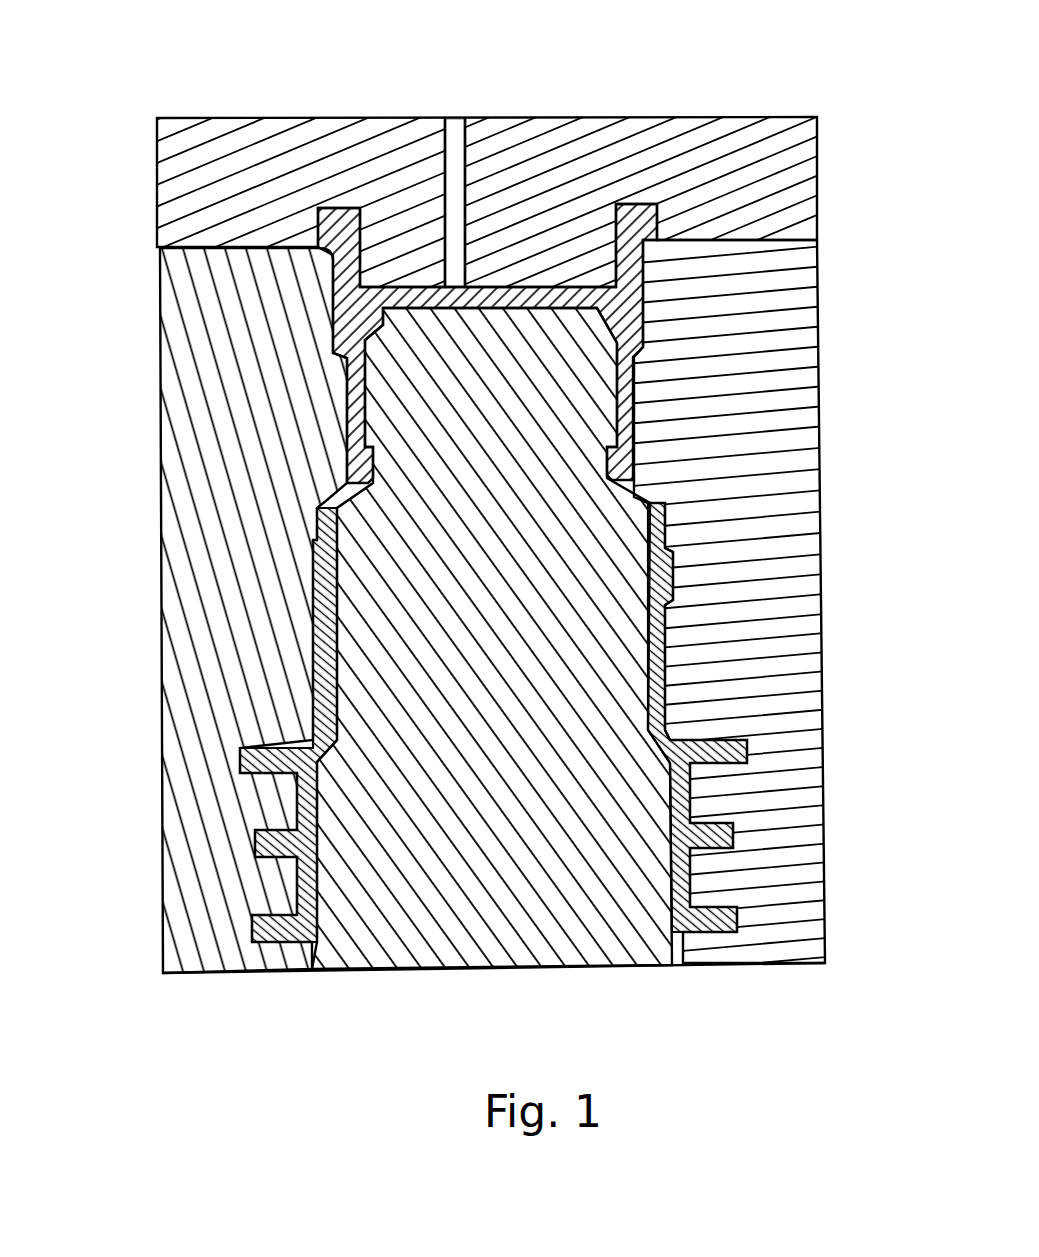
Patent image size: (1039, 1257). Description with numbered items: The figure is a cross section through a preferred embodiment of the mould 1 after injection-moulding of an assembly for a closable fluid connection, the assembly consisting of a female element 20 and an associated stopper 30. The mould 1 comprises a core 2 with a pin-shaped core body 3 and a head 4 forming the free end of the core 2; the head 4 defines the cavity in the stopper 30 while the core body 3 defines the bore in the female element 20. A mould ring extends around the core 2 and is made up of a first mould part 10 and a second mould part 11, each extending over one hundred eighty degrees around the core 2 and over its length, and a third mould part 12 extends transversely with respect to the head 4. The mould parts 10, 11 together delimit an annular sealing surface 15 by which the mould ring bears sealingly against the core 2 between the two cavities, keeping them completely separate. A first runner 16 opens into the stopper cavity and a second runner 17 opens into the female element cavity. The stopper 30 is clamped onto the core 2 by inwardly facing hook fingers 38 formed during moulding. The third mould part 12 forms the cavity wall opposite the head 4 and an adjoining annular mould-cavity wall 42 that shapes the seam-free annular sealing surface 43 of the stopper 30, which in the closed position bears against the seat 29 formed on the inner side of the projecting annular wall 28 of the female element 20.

The mould 1 is at (188, 1042).
The core 2 is at (456, 996).
The core body 3 is at (488, 802).
The head 4 is at (472, 377).
The first mould part 10 is at (232, 628).
The second mould part 11 is at (798, 568).
The third mould part 12 is at (537, 128).
The annular sealing surface 15 is at (345, 498).
The first runner 16 is at (445, 187).
The second runner 17 is at (750, 762).
The female element 20 is at (663, 697).
The annular wall 28 is at (660, 523).
The seat 29 is at (653, 526).
The stopper 30 is at (633, 310).
The hook fingers 38 is at (357, 485).
The annular mould-cavity wall 42 is at (318, 227).
The annular sealing surface 43 is at (339, 205).